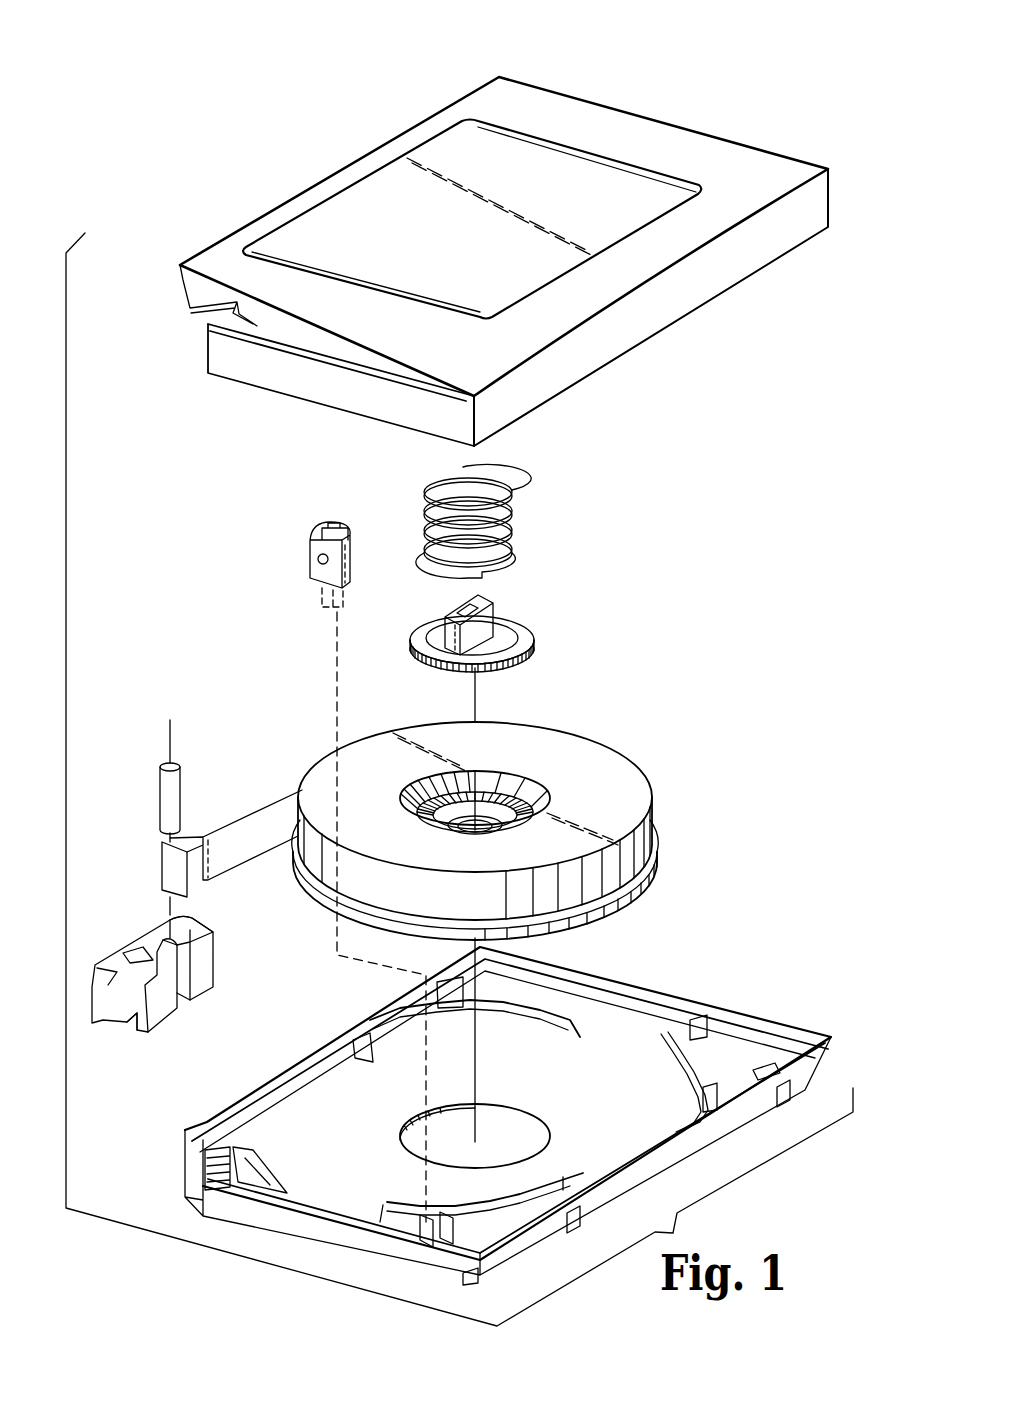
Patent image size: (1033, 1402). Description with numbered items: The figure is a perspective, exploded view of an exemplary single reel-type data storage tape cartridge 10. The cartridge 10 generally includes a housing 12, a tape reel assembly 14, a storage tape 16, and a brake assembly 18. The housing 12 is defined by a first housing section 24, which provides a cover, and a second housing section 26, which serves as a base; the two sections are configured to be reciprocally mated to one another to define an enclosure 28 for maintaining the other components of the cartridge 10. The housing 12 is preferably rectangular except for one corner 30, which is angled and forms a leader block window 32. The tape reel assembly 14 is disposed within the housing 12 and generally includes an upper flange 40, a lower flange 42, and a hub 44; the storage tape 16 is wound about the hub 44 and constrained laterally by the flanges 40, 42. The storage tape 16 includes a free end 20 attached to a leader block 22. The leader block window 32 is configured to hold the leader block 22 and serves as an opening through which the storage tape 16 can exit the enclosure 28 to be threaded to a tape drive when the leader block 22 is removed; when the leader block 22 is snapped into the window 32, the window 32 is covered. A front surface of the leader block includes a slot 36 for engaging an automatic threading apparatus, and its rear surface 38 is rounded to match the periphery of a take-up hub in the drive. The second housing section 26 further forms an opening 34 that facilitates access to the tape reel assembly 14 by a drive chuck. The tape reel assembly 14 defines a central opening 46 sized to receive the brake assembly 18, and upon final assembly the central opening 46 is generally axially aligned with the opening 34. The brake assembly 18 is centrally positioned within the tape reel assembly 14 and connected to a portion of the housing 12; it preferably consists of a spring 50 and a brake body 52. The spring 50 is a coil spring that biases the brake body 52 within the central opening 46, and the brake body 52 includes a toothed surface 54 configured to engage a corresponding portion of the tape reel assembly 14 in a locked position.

The data storage tape cartridge 10 is at (758, 57).
The housing 12 is at (797, 139).
The tape reel assembly 14 is at (504, 805).
The storage tape 16 is at (268, 817).
The brake assembly 18 is at (599, 538).
The free end 20 is at (172, 865).
The leader block 22 is at (196, 975).
The first housing section 24 is at (540, 96).
The second housing section 26 is at (477, 1109).
The enclosure 28 is at (604, 1056).
The corner 30 is at (181, 290).
The leader block window 32 is at (186, 1170).
The opening 34 is at (519, 1106).
The slot 36 is at (135, 1013).
The rear surface 38 is at (204, 926).
The upper flange 40 is at (621, 770).
The lower flange 42 is at (641, 857).
The hub 44 is at (512, 781).
The central opening 46 is at (427, 787).
The spring 50 is at (521, 480).
The brake body 52 is at (504, 638).
The toothed surface 54 is at (453, 673).